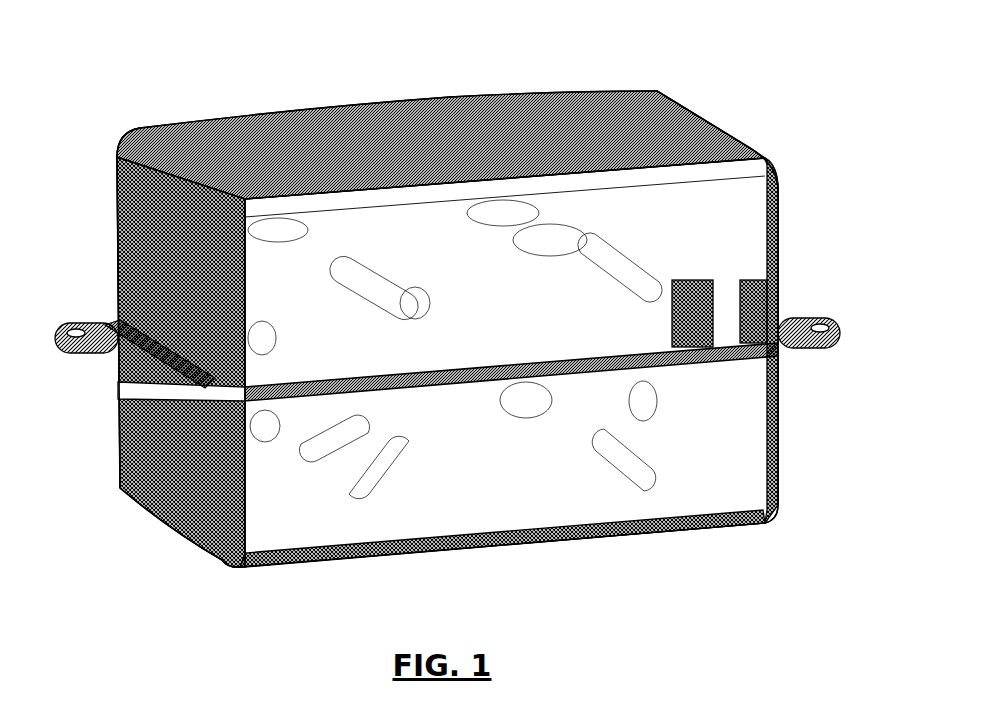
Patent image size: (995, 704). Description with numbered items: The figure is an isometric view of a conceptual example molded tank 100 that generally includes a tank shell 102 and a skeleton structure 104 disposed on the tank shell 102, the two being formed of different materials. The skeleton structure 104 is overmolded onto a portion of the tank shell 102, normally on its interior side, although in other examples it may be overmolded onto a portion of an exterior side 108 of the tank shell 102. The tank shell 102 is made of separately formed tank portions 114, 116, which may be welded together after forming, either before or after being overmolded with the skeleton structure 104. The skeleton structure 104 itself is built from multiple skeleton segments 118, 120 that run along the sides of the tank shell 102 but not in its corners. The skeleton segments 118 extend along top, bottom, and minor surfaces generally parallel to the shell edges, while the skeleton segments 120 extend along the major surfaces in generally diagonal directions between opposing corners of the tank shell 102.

The molded tank 100 is at (180, 30).
The tank shell 102 is at (622, 80).
The skeleton structure 104 is at (542, 339).
The exterior side 108 is at (140, 296).
The tank portion 114 is at (794, 220).
The tank portion 116 is at (795, 420).
The skeleton segment 118 is at (258, 140).
The skeleton segment 120 is at (337, 226).